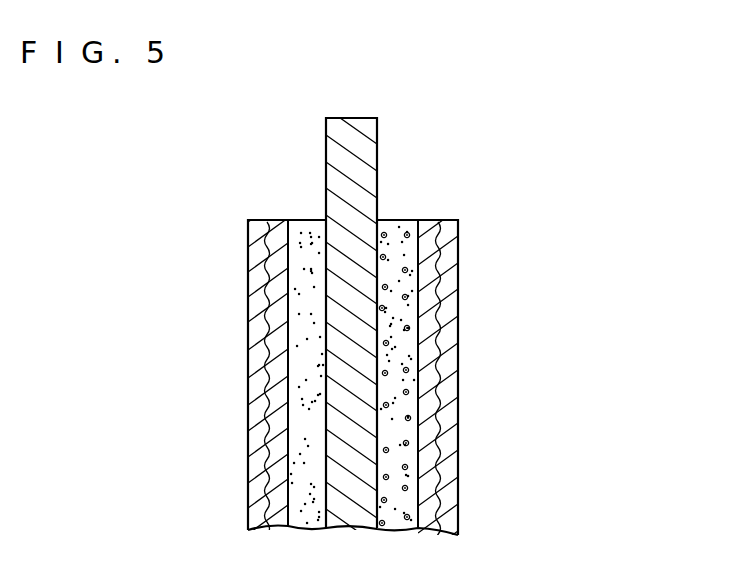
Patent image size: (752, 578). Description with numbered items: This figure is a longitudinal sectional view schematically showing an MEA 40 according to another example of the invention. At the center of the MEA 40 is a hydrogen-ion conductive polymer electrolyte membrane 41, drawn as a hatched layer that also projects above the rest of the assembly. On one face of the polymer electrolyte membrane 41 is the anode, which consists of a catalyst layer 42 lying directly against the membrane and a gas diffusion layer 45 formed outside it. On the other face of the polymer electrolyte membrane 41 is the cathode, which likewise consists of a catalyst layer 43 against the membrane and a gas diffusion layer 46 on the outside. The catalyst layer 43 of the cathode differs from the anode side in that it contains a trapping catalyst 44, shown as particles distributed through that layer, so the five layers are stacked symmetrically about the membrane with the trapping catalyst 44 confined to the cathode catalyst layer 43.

The MEA 40 is at (474, 150).
The hydrogen-ion conductive polymer electrolyte membrane 41 is at (357, 150).
The catalyst layer 42 is at (310, 261).
The catalyst layer 43 is at (407, 241).
The trapping catalyst 44 is at (408, 419).
The gas diffusion layer 45 is at (266, 352).
The gas diffusion layer 46 is at (442, 328).